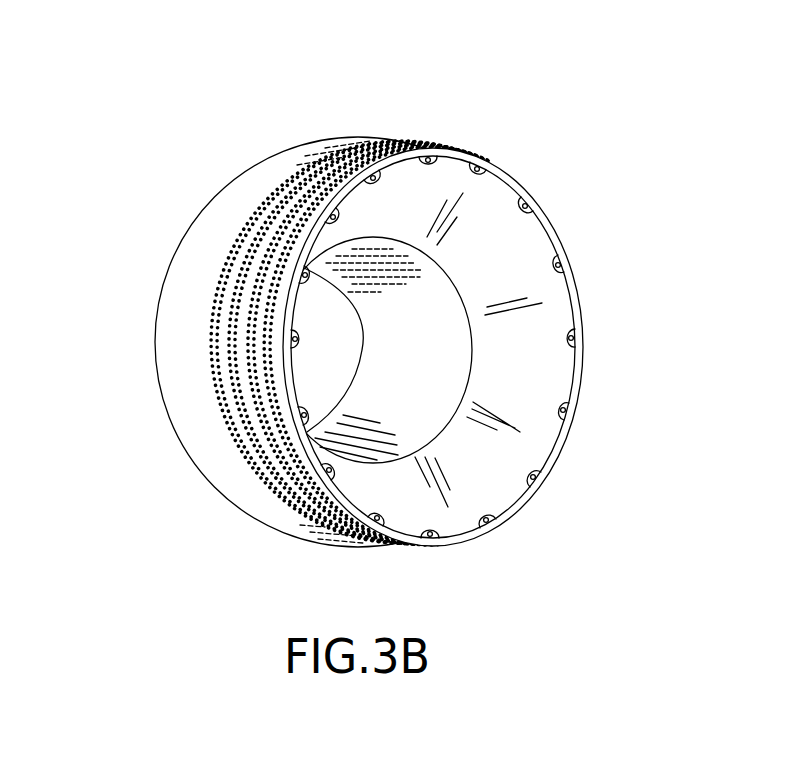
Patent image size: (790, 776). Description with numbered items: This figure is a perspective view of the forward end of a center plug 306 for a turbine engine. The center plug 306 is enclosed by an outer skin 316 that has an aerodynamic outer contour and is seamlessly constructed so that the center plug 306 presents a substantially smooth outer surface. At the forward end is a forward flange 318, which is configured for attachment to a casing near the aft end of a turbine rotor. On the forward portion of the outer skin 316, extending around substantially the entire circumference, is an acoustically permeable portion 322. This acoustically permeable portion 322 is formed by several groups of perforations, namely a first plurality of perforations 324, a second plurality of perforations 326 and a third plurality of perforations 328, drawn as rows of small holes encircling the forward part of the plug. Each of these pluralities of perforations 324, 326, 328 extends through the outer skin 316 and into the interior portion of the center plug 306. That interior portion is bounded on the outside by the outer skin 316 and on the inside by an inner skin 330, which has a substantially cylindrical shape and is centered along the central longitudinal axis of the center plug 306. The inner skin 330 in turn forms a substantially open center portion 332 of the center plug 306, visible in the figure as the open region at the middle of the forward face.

The center plug 306 is at (164, 114).
The outer skin 316 is at (177, 417).
The forward flange 318 is at (577, 330).
The acoustically permeable portion 322 is at (232, 478).
The first plurality of perforations 324 is at (287, 242).
The second plurality of perforations 326 is at (237, 320).
The third plurality of perforations 328 is at (210, 345).
The inner skin 330 is at (447, 381).
The open center portion 332 is at (353, 347).